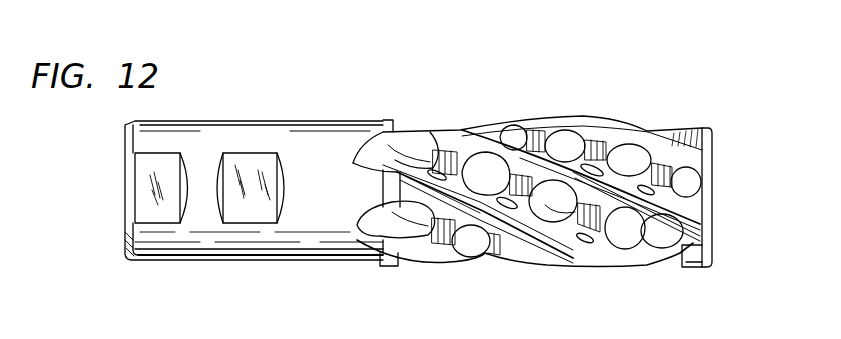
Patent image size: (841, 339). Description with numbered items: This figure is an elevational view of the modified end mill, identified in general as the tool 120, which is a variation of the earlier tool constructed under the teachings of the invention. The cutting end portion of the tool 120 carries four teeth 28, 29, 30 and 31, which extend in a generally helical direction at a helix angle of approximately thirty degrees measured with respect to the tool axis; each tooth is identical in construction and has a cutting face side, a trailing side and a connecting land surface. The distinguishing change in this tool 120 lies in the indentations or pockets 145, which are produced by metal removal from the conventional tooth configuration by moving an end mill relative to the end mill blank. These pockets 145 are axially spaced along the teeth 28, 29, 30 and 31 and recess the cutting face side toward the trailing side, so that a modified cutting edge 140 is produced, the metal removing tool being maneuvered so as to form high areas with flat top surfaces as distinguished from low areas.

The tool 120 is at (263, 60).
The pockets 145 is at (460, 133).
The tooth 30 is at (525, 122).
The cutting edge 140 is at (535, 124).
The tooth 31 is at (694, 128).
The tooth 28 is at (502, 233).
The tooth 29 is at (676, 244).